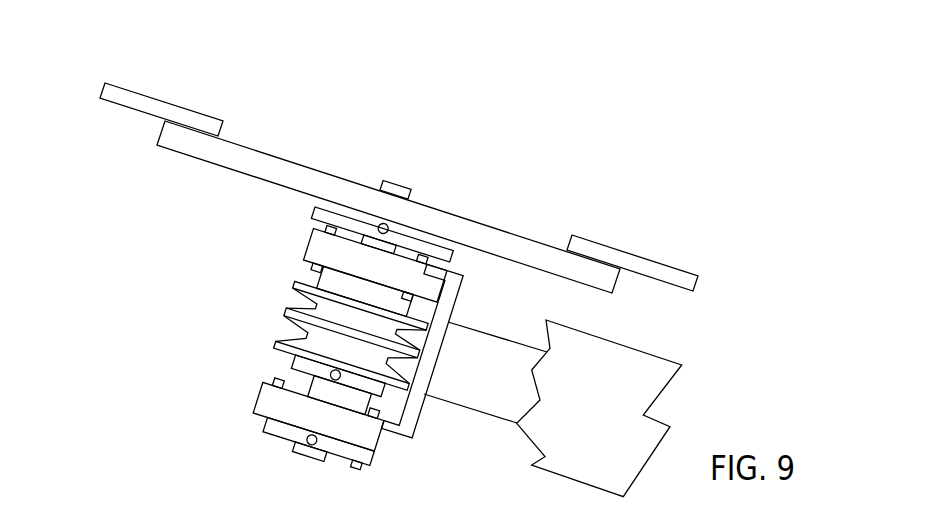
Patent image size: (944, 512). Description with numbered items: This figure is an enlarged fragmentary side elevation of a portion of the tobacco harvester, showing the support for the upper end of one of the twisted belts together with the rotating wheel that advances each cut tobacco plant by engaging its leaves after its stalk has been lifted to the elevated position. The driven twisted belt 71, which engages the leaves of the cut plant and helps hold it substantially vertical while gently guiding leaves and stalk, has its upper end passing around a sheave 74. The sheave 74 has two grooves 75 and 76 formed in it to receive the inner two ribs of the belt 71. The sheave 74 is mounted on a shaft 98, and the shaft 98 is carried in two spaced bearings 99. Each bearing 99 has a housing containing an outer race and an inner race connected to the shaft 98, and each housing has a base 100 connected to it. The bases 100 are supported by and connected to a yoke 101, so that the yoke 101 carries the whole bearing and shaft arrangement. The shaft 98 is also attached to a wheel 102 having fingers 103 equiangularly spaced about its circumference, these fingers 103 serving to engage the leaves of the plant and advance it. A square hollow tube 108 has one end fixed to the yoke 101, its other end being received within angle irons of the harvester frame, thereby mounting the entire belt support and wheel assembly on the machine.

The twisted belt 71 is at (674, 358).
The sheave 74 is at (288, 309).
The groove 75 is at (290, 310).
The groove 76 is at (293, 330).
The shaft 98 is at (308, 379).
The bearing 99 is at (313, 250).
The base 100 is at (441, 291).
The yoke 101 is at (424, 418).
The wheel 102 is at (272, 155).
The finger 103 is at (152, 95).
The square hollow tube 108 is at (518, 343).